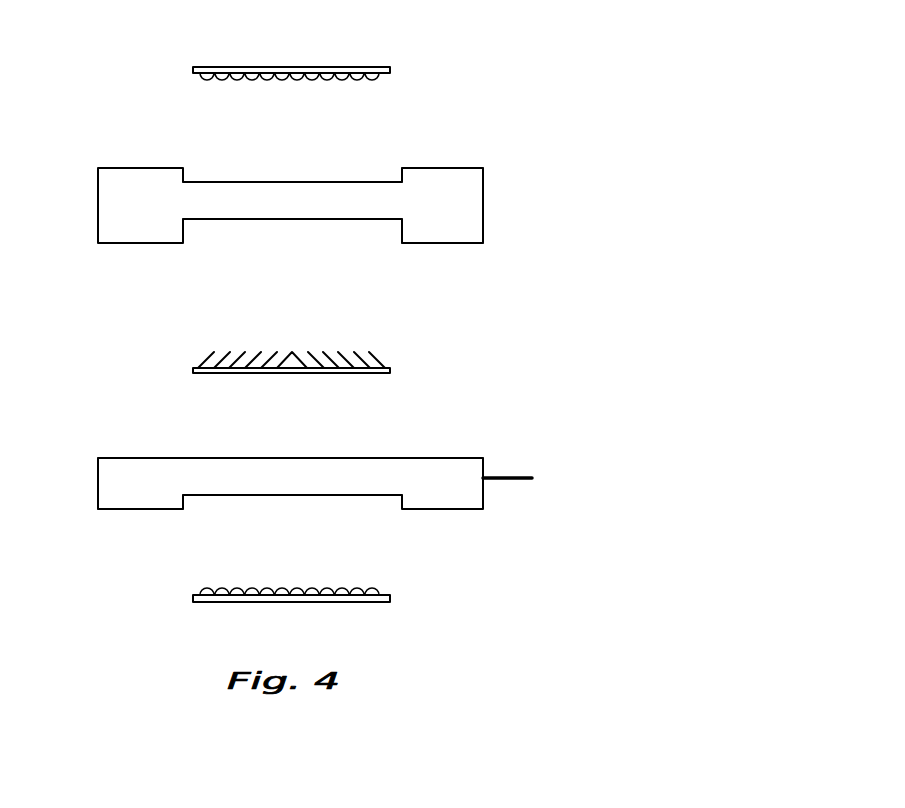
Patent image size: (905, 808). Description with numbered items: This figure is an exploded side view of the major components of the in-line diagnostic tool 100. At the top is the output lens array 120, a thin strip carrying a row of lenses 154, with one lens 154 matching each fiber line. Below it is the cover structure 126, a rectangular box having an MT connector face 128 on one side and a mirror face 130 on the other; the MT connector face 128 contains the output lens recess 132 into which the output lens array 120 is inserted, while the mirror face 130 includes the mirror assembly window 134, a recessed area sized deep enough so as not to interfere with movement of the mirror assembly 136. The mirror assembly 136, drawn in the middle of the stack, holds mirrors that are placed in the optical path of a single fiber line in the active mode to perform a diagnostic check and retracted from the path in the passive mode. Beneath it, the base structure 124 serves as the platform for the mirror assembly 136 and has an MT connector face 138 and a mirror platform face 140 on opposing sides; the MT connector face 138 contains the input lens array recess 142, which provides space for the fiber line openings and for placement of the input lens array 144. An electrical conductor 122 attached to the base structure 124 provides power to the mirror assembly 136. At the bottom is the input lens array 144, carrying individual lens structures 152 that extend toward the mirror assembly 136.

The in-line diagnostic tool 100 is at (502, 360).
The output lens array 120 is at (359, 66).
The electrical conductor 122 is at (518, 482).
The base structure 124 is at (438, 490).
The cover structure 126 is at (457, 206).
The MT connector face 128 is at (439, 167).
The mirror face 130 is at (440, 244).
The output lens recess 132 is at (332, 181).
The mirror assembly window 134 is at (307, 221).
The mirror assembly 136 is at (297, 374).
The MT connector face 138 is at (148, 511).
The mirror platform face 140 is at (148, 458).
The input lens array recess 142 is at (320, 497).
The input lens array 144 is at (300, 603).
The lens structure 152 is at (209, 590).
The lens 154 is at (211, 82).